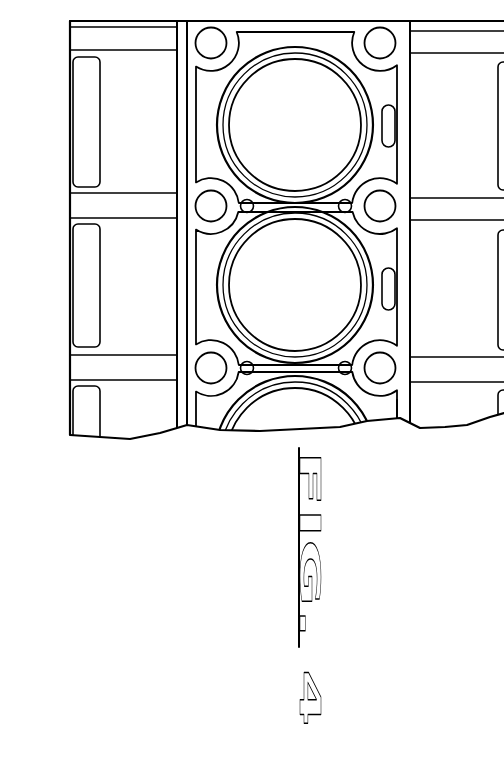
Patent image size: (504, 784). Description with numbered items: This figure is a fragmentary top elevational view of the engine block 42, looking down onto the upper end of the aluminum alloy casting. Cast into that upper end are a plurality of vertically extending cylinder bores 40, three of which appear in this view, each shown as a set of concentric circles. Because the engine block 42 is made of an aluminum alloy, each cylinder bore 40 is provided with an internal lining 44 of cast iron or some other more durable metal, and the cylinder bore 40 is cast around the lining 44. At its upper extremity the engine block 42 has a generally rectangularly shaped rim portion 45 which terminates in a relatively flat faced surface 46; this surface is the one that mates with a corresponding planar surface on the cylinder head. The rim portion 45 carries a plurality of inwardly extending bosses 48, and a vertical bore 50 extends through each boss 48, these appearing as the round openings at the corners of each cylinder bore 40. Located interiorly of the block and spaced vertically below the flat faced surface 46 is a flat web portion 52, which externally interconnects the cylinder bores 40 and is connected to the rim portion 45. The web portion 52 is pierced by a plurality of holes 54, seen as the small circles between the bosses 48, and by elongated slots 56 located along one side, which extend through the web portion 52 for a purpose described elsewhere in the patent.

The cylinder bore 40 is at (214, 132).
The engine block 42 is at (125, 442).
The internal lining 44 is at (238, 92).
The rim portion 45 is at (420, 393).
The flat faced surface 46 is at (412, 398).
The boss 48 is at (204, 403).
The vertical bore 50 is at (224, 372).
The web portion 52 is at (393, 417).
The hole 54 is at (344, 213).
The slot 56 is at (393, 123).